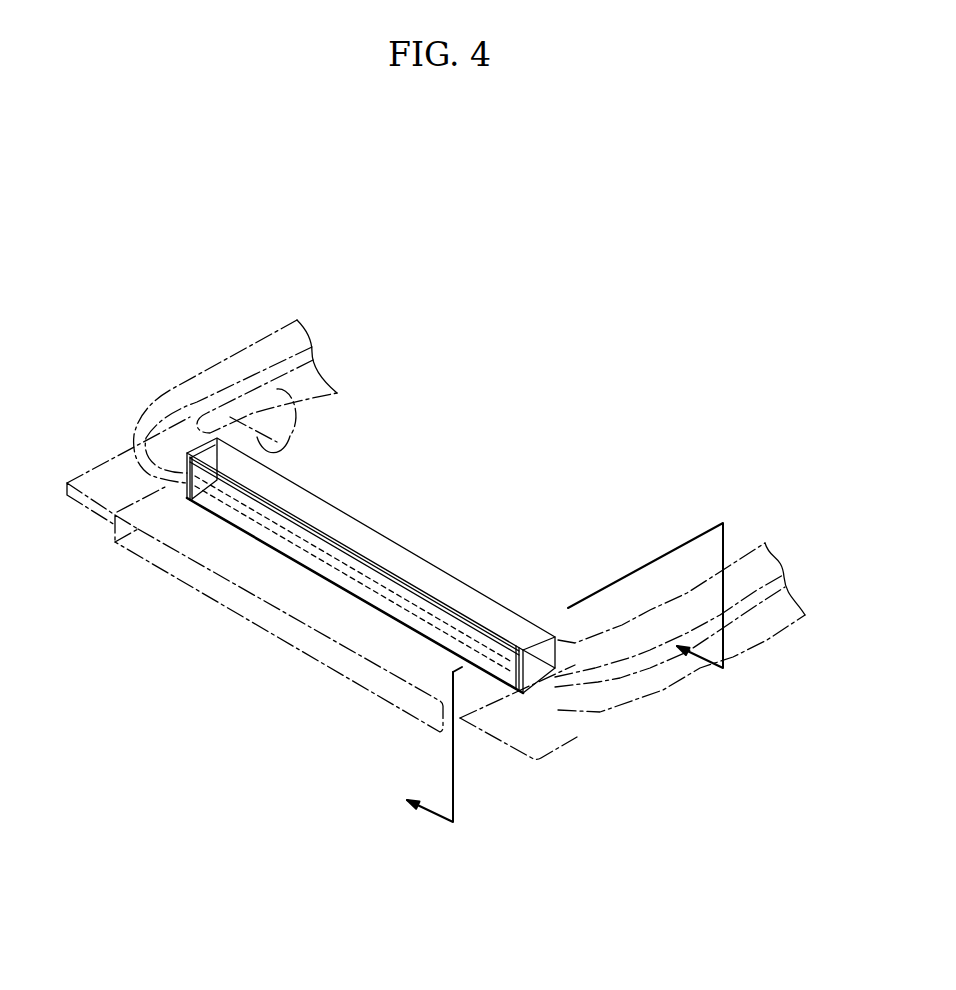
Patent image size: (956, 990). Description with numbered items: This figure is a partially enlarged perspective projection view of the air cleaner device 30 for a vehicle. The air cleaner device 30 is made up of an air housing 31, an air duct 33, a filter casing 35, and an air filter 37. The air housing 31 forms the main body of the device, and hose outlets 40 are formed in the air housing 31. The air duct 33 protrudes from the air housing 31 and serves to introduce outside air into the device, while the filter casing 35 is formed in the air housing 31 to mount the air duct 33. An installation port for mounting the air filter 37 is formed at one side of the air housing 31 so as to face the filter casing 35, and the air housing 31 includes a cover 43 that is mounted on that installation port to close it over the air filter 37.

The air cleaner device 30 is at (463, 174).
The air housing 31 is at (263, 340).
The air duct 33 is at (207, 585).
The filter casing 35 is at (545, 703).
The air filter 37 is at (552, 662).
The hose outlets 40 is at (268, 391).
The cover 43 is at (203, 448).